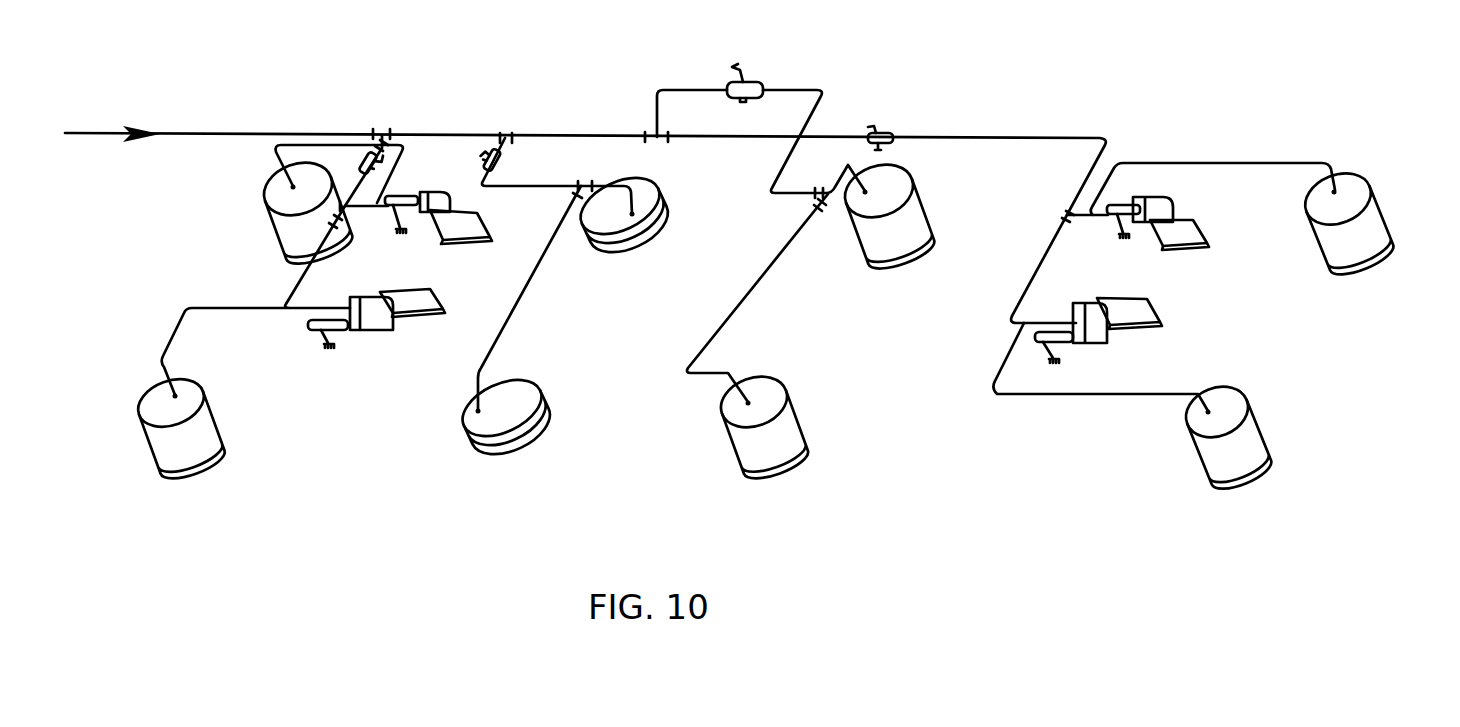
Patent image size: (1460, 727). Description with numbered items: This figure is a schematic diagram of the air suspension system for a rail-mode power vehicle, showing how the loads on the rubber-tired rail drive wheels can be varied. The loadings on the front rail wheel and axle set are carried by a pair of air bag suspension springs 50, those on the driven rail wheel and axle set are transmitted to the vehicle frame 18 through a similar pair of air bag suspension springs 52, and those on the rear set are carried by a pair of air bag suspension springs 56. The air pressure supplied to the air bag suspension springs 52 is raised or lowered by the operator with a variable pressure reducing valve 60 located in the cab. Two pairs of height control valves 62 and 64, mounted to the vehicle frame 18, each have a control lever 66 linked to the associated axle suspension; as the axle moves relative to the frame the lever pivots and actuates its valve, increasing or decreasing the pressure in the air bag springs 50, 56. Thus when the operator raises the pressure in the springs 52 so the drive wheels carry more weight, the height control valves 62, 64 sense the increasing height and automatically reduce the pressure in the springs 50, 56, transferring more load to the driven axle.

The vehicle frame 18 is at (470, 211).
The air bag suspension springs 50 is at (298, 236).
The air bag suspension springs 52 is at (882, 237).
The air bag suspension springs 56 is at (1378, 215).
The variable pressure reducing valve 60 is at (749, 82).
The height control valves 62 is at (367, 307).
The height control valves 64 is at (1077, 317).
The control lever 66 is at (407, 196).